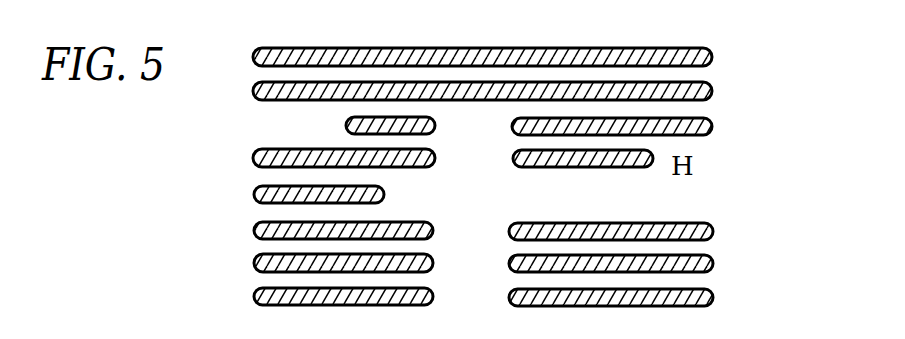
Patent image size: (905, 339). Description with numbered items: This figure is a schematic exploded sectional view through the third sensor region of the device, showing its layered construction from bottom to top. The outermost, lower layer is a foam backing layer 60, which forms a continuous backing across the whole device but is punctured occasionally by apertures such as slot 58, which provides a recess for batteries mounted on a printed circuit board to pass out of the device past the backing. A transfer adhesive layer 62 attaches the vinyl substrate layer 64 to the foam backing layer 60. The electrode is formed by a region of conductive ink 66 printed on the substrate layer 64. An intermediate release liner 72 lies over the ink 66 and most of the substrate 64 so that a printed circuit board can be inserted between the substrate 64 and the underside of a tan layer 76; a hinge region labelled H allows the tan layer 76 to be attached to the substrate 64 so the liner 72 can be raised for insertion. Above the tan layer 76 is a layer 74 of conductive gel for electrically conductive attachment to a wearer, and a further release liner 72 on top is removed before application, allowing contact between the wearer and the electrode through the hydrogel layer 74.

The slot 58 is at (486, 207).
The foam backing layer 60 is at (713, 297).
The transfer adhesive layer 62 is at (713, 263).
The substrate layer 64 is at (713, 231).
The conductive ink 66 is at (254, 190).
The release liner 72 is at (712, 58).
The layer of conductive gel 74 is at (712, 92).
The tan layer 76 is at (712, 127).